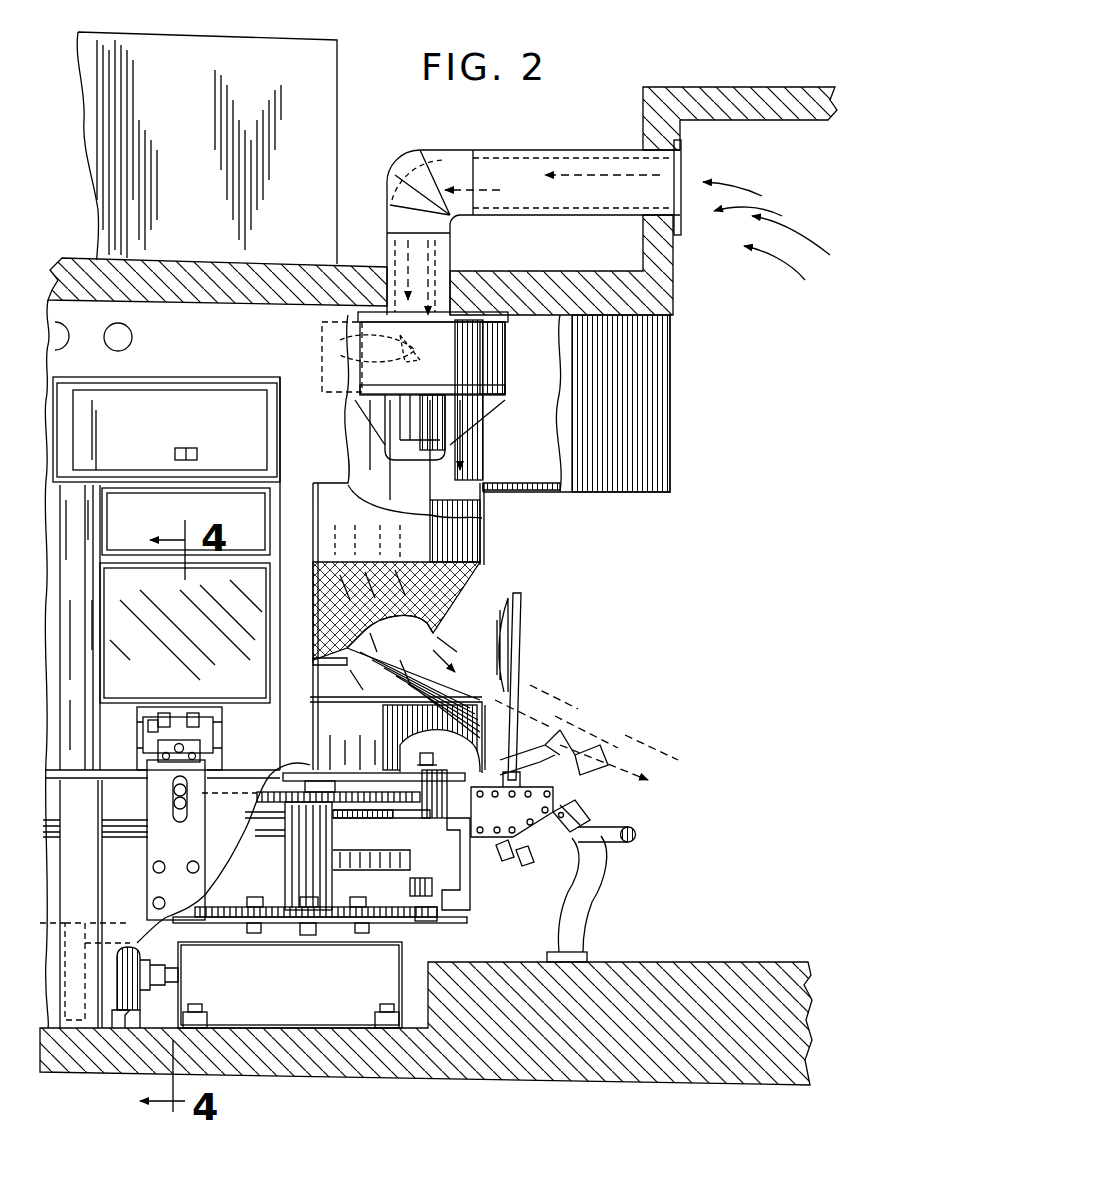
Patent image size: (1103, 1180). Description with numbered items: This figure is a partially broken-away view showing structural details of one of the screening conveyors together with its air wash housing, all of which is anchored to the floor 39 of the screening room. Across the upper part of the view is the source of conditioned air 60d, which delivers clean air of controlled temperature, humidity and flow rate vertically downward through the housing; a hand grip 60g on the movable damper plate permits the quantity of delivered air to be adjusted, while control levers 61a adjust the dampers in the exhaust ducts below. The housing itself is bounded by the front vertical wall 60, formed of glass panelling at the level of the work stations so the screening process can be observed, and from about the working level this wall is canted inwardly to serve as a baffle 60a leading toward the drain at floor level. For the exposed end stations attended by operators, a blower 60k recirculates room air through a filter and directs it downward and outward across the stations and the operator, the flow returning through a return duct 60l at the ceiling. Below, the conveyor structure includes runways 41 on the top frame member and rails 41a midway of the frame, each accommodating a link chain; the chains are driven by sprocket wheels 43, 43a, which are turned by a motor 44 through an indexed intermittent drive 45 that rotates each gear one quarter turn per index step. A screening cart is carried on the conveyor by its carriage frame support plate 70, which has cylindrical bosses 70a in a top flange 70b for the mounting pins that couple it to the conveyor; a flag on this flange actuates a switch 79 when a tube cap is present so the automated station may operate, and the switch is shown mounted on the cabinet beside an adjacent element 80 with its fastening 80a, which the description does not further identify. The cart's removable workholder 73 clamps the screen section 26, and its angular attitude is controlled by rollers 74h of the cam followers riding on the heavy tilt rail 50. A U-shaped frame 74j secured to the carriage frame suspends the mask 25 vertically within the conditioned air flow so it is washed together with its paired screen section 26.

The source of conditioned air 60d is at (337, 137).
The return duct 60l is at (688, 172).
The control lever 61a is at (125, 340).
The hand grip 60g is at (190, 450).
The blower 60k is at (470, 400).
The front vertical wall 60 is at (243, 615).
The cylindrical boss 70a is at (410, 767).
The U-shaped frame 74j is at (522, 675).
The mask 25 is at (540, 612).
The screen section 26 is at (575, 748).
The bracket assembly 80 is at (188, 727).
The bracket bolt 80a is at (162, 727).
The switch 79 is at (200, 747).
The sprocket wheel 43 is at (358, 805).
The sprocket wheel 43a is at (387, 910).
The runway 41 is at (447, 803).
The carriage frame support plate 70 is at (458, 870).
The top flange 70b is at (432, 890).
The rail 41a is at (437, 914).
The removable workholder 73 is at (570, 790).
The tilt rail 50 is at (570, 822).
The roller 74h is at (575, 840).
The indexed intermittent drive 45 is at (343, 1030).
The motor 44 is at (72, 1000).
The baffle 60a is at (120, 917).
The floor 39 is at (668, 962).